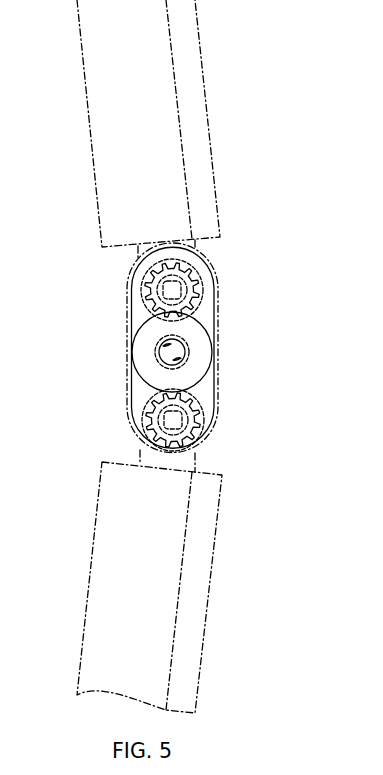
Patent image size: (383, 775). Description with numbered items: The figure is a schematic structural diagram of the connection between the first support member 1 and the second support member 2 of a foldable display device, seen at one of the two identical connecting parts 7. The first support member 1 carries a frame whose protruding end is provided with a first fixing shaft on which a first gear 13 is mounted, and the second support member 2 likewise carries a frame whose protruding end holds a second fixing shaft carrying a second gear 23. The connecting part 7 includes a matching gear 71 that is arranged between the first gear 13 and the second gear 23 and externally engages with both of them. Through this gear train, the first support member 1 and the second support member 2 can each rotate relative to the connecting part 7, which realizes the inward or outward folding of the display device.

The first support member 1 is at (110, 557).
The second support member 2 is at (110, 139).
The connecting part 7 is at (213, 323).
The first gear 13 is at (140, 427).
The second gear 23 is at (150, 292).
The matching gear 71 is at (152, 358).